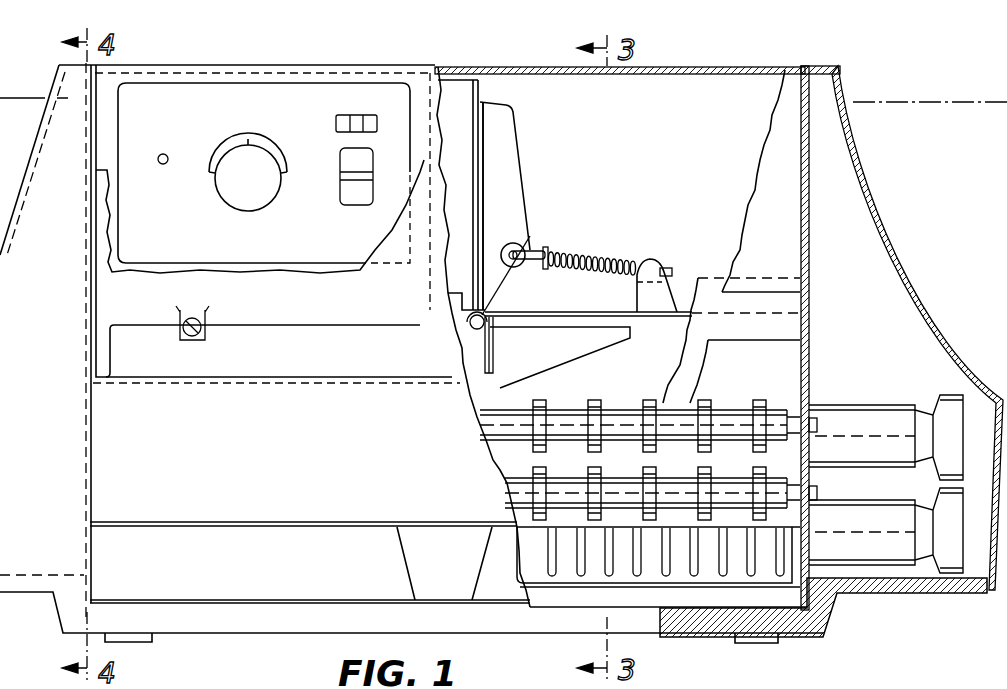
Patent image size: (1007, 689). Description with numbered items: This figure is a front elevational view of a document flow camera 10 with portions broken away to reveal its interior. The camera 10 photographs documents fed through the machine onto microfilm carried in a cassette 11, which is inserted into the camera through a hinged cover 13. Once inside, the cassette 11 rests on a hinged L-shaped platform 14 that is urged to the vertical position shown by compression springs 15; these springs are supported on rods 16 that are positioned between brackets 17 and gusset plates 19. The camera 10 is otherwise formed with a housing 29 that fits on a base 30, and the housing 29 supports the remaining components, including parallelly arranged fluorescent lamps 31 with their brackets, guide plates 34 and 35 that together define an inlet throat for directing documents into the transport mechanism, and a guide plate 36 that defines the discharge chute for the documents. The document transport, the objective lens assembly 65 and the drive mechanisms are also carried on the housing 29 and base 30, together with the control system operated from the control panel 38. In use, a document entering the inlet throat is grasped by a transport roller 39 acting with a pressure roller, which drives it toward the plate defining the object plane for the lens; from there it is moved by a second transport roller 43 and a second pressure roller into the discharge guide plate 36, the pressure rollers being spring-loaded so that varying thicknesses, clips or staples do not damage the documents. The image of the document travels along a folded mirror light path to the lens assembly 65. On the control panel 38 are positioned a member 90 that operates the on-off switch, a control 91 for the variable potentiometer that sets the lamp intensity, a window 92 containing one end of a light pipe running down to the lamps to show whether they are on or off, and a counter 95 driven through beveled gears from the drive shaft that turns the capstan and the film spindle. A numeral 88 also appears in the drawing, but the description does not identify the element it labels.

The camera 10 is at (905, 238).
The cassette 11 is at (494, 88).
The hinged cover 13 is at (743, 70).
The hinged L-shaped platform 14 is at (483, 160).
The compression springs 15 is at (605, 252).
The rods 16 is at (523, 253).
The brackets 17 is at (646, 297).
The gusset plates 19 is at (517, 190).
The housing 29 is at (760, 163).
The base 30 is at (828, 626).
The fluorescent lamps 31 is at (922, 506).
The guide plate 34 is at (783, 370).
The guide plate 35 is at (787, 327).
The guide plate 36 is at (678, 572).
The control panel 38 is at (182, 236).
The transport roller 39 is at (714, 410).
The second transport roller 43 is at (713, 487).
The lens assembly 65 is at (503, 352).
The support plate 88 is at (588, 350).
The member 90 is at (347, 200).
The control 91 is at (248, 193).
The window 92 is at (164, 154).
The counter 95 is at (344, 114).